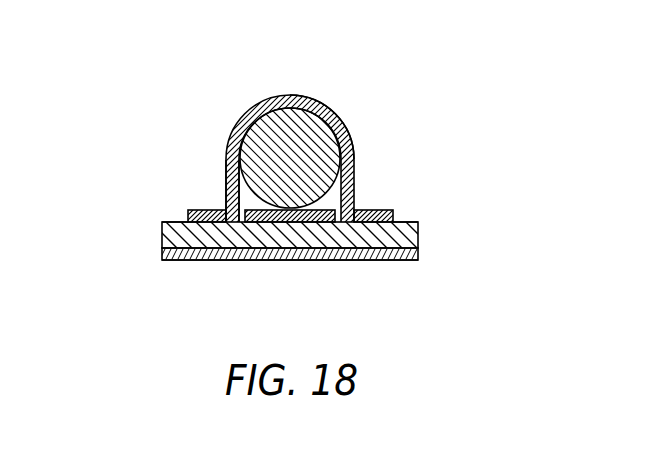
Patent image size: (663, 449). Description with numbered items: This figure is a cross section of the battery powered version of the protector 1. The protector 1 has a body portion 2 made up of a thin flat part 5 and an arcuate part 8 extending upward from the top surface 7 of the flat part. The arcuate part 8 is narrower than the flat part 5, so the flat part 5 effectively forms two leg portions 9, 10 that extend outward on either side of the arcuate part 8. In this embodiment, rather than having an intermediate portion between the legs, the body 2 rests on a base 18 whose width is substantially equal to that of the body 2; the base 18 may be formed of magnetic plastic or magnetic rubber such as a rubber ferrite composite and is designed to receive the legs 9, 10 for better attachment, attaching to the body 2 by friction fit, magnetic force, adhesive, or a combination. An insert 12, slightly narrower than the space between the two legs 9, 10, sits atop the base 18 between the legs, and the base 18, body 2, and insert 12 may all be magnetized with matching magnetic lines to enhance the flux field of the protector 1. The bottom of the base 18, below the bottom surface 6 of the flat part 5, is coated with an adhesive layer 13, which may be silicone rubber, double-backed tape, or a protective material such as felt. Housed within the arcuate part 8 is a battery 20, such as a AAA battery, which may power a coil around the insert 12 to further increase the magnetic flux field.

The protector 1 is at (126, 286).
The body portion 2 is at (344, 122).
The thin flat part 5 is at (405, 222).
The bottom surface 6 is at (192, 259).
The top surface 7 is at (177, 221).
The arcuate part 8 is at (302, 101).
The leg portion 9 is at (203, 210).
The leg portion 10 is at (388, 210).
The insert 12 is at (225, 180).
The layer of adhesive 13 is at (393, 254).
The base 18 is at (318, 238).
The battery 20 is at (275, 145).